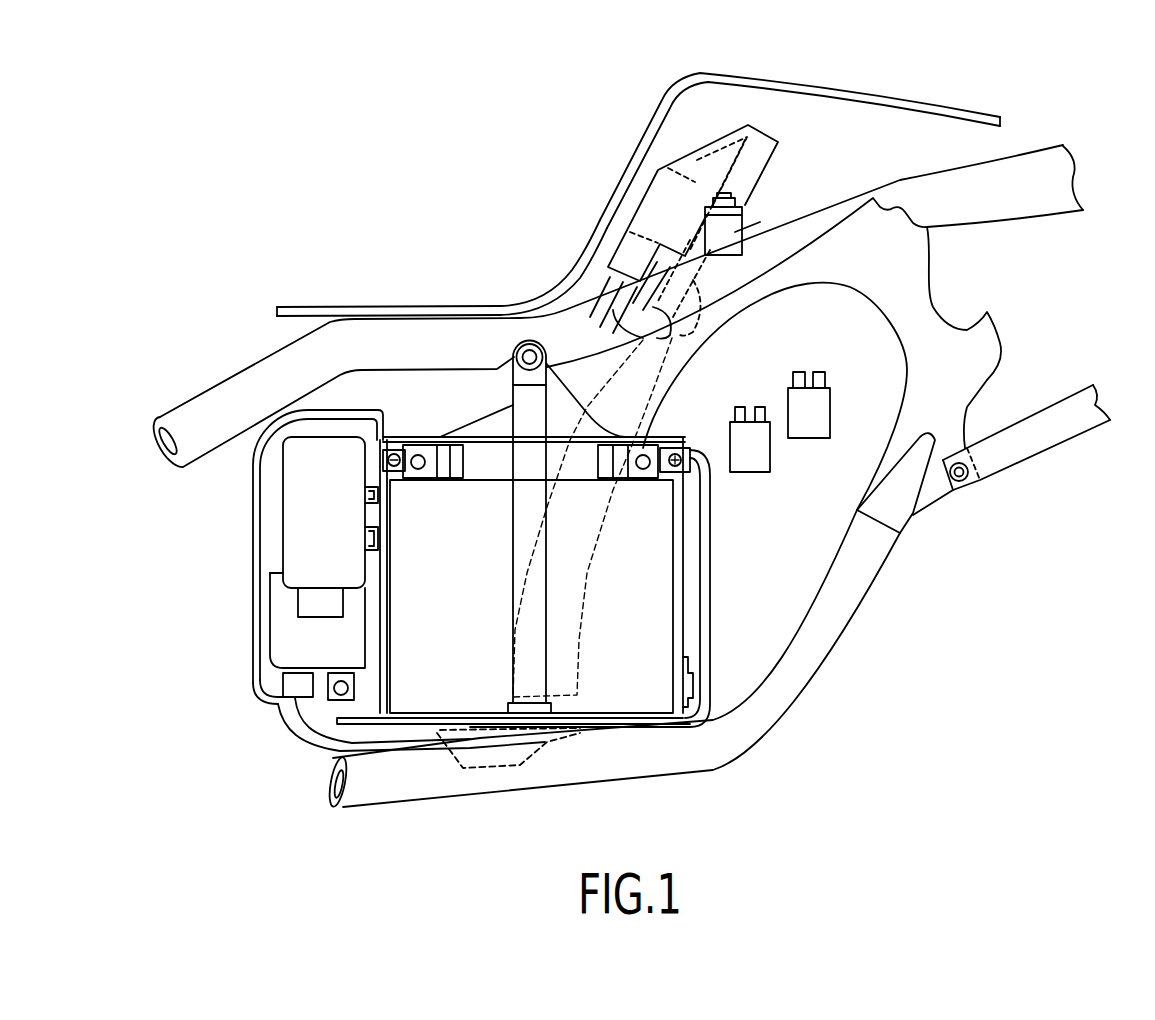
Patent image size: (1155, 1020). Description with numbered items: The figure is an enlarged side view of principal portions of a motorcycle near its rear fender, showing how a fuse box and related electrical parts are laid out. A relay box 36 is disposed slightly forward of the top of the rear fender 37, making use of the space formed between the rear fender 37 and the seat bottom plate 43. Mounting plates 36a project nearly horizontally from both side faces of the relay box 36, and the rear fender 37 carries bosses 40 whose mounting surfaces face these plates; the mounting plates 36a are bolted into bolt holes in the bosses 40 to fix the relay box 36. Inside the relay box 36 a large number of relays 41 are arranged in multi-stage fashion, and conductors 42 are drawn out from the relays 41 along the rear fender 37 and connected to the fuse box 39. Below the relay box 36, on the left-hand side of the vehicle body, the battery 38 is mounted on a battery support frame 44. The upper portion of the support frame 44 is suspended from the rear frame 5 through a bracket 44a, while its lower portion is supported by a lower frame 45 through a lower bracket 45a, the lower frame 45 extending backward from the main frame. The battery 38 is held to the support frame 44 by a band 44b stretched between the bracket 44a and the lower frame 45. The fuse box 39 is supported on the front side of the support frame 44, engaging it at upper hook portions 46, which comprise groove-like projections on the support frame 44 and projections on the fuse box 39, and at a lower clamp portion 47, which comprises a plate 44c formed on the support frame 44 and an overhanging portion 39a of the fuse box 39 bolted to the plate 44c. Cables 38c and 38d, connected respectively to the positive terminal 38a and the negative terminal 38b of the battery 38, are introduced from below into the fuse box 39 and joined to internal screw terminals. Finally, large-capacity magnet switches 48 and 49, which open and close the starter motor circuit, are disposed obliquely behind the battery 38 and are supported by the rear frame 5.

The rear frame 5 is at (448, 330).
The relay box 36 is at (678, 170).
The mounting plates 36a is at (743, 212).
The rear fender 37 is at (1037, 147).
The battery 38 is at (646, 631).
The positive terminal 38a is at (643, 472).
The negative terminal 38b is at (418, 472).
The cable 38c is at (707, 600).
The cable 38d is at (252, 612).
The fuse box 39 is at (287, 538).
The overhanging portion 39a is at (323, 708).
The bosses 40 is at (743, 228).
The relays 41 is at (755, 167).
The conductors 42 is at (666, 340).
The seat bottom plate 43 is at (933, 113).
The battery support frame 44 is at (685, 557).
The bracket 44a is at (483, 397).
The band 44b is at (517, 552).
The plate 44c is at (373, 691).
The lower frame 45 is at (673, 770).
The lower bracket 45a is at (540, 747).
The upper hook portions 46 is at (367, 542).
The lower clamp portion 47 is at (332, 733).
The magnet switch 48 is at (749, 470).
The magnet switch 49 is at (805, 432).